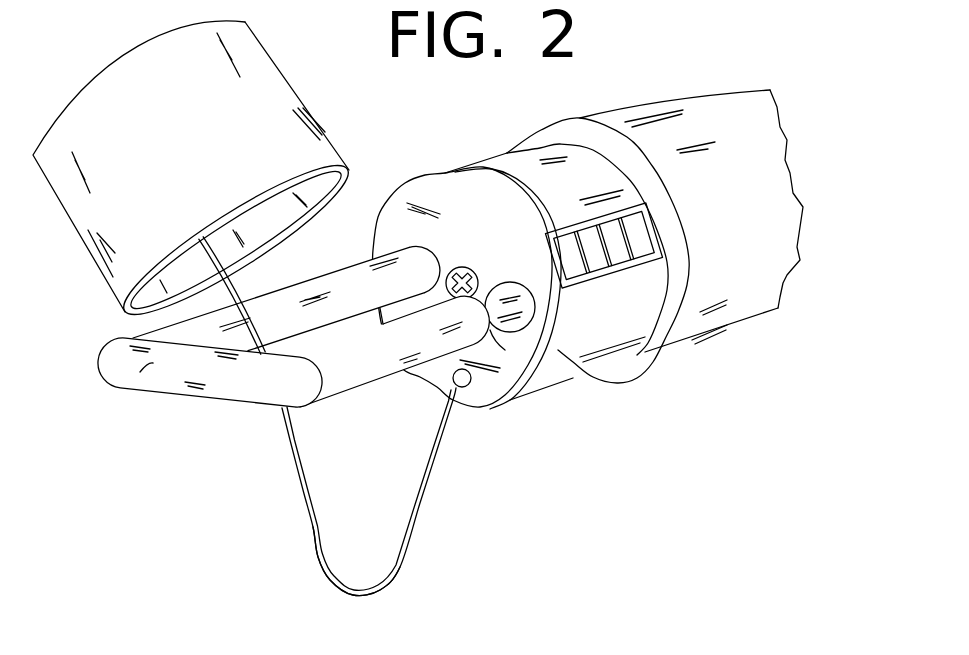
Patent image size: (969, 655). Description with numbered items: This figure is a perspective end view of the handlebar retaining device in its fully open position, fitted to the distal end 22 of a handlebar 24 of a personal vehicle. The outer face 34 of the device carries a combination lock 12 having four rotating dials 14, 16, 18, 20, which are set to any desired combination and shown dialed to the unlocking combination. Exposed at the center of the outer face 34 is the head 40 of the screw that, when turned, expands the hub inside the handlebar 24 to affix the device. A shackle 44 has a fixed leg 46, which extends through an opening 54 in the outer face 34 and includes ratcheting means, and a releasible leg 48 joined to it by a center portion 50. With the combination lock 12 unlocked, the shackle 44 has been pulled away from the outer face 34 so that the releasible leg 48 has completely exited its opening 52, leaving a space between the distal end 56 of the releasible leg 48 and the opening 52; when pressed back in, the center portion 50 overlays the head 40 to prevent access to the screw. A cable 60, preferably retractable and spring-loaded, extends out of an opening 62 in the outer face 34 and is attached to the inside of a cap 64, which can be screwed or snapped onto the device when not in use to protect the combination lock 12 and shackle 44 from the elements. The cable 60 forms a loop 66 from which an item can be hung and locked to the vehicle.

The combination lock 12 is at (595, 257).
The rotating dial 14 is at (567, 282).
The rotating dial 16 is at (597, 272).
The rotating dial 18 is at (627, 268).
The rotating dial 20 is at (637, 257).
The distal end 22 is at (633, 378).
The handlebar 24 is at (715, 117).
The outer face 34 is at (413, 384).
The head 40 is at (465, 266).
The shackle 44 is at (155, 362).
The fixed leg 46 is at (363, 276).
The releasible leg 48 is at (367, 375).
The center portion 50 is at (221, 380).
The opening 52 is at (510, 283).
The opening 54 is at (430, 248).
The distal end 56 is at (503, 338).
The cable 60 is at (427, 470).
The opening 62 is at (472, 390).
The cap 64 is at (257, 94).
The loop 66 is at (366, 590).